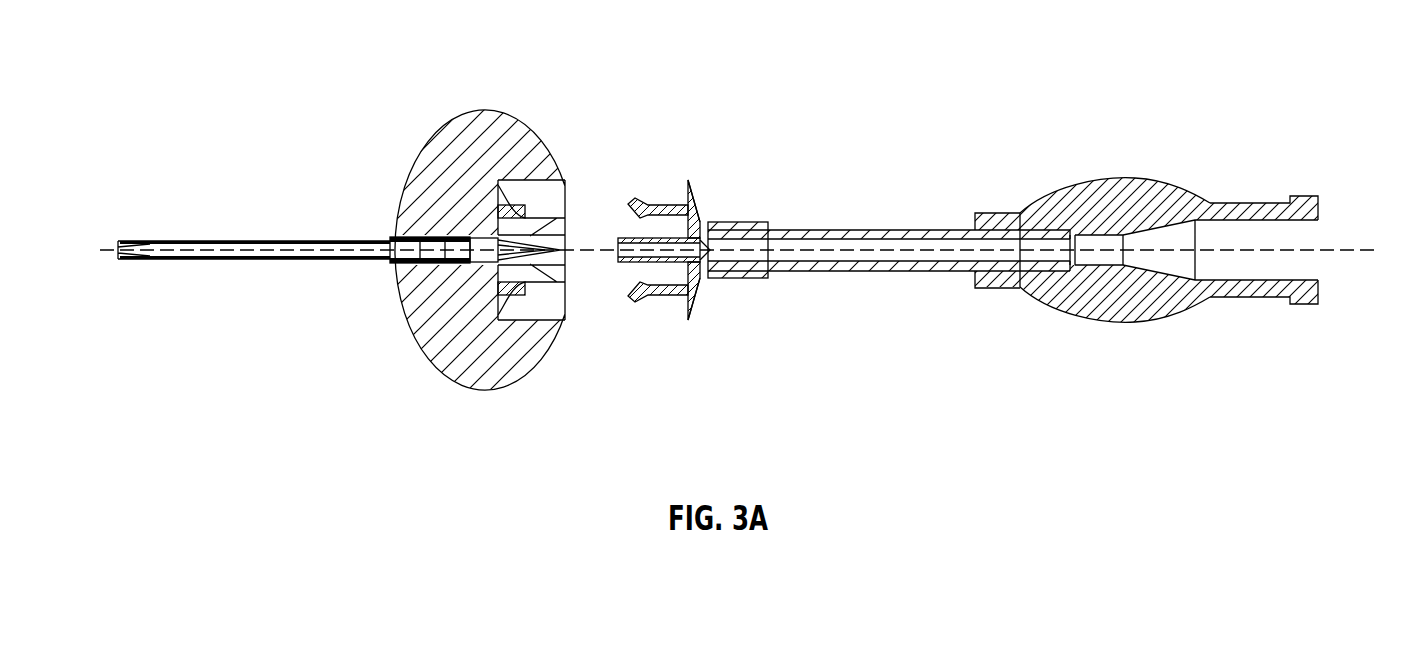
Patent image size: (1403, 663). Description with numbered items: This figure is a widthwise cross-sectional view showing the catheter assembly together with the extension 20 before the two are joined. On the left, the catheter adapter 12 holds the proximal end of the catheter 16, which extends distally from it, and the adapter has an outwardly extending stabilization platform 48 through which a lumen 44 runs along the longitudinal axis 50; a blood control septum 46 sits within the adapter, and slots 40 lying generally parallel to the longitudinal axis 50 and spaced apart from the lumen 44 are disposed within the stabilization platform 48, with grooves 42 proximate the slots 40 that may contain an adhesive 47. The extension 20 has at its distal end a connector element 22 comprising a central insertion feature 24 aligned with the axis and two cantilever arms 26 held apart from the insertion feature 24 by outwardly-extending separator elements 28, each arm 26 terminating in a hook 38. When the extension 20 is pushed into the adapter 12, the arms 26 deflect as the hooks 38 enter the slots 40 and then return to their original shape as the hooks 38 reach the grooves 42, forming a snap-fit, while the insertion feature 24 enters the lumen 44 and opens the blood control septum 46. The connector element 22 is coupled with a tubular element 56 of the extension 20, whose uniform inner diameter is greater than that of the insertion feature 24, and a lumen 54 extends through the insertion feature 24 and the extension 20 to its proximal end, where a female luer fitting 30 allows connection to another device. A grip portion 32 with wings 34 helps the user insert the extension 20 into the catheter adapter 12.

The catheter adapter 12 is at (464, 103).
The catheter 16 is at (233, 241).
The extension 20 is at (904, 191).
The connector element 22 is at (628, 126).
The insertion feature 24 is at (632, 240).
The cantilever arms 26 is at (683, 190).
The separator elements 28 is at (705, 212).
The female luer fitting 30 is at (1329, 212).
The grip portion 32 is at (1069, 168).
The wings 34 is at (1148, 182).
The hook 38 is at (640, 200).
The slot 40 is at (542, 178).
The groove 42 is at (500, 212).
The lumen 44 is at (462, 264).
The blood control septum 46 is at (566, 292).
The adhesive 47 is at (515, 180).
The stabilization platform 48 is at (410, 203).
The longitudinal axis 50 is at (1345, 257).
The lumen 54 is at (882, 243).
The tubular element 56 is at (883, 268).